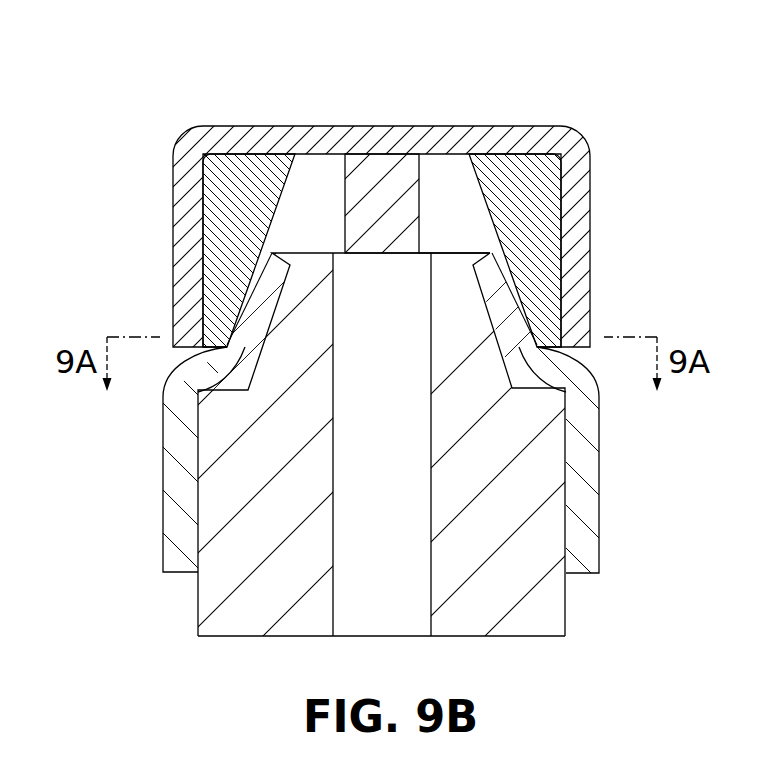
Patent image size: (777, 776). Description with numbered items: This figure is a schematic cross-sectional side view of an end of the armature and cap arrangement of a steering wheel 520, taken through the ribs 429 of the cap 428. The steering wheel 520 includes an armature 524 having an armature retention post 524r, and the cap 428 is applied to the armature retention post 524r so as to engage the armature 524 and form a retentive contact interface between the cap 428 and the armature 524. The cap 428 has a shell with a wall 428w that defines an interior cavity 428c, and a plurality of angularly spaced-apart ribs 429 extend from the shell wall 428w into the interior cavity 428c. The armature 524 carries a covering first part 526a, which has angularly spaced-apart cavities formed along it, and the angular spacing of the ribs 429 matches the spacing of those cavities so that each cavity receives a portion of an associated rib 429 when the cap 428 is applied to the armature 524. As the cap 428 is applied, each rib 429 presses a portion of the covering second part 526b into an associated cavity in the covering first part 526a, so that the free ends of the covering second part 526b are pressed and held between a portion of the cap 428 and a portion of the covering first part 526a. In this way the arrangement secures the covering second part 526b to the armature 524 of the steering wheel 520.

The cap 428 is at (186, 135).
The wall 428w is at (278, 138).
The interior cavity 428c is at (442, 188).
The ribs 429 is at (252, 178).
The armature retention post 524r is at (367, 207).
The armature 524 is at (375, 462).
The covering second part 526b is at (260, 312).
The covering first part 526a is at (218, 568).
The steering wheel 520 is at (178, 638).